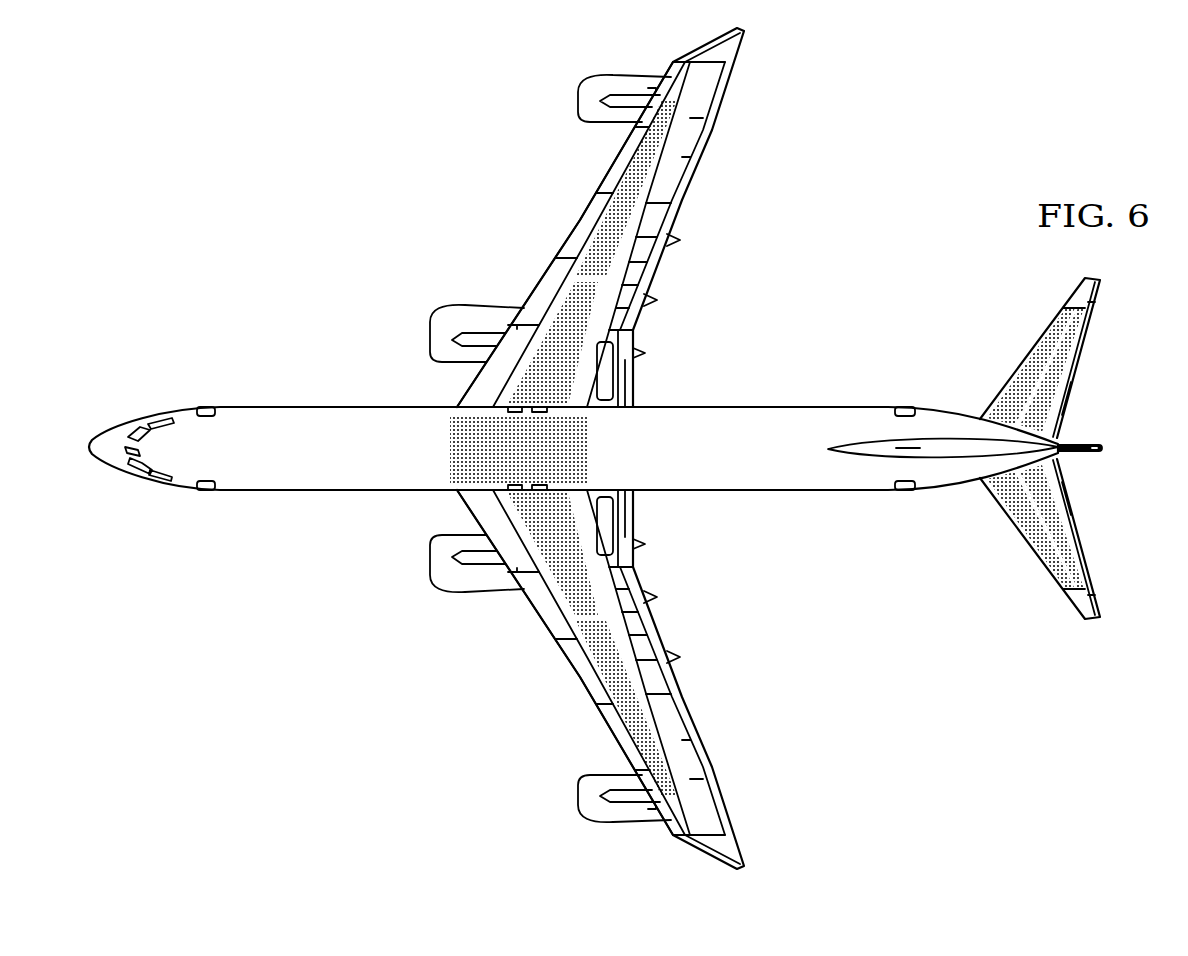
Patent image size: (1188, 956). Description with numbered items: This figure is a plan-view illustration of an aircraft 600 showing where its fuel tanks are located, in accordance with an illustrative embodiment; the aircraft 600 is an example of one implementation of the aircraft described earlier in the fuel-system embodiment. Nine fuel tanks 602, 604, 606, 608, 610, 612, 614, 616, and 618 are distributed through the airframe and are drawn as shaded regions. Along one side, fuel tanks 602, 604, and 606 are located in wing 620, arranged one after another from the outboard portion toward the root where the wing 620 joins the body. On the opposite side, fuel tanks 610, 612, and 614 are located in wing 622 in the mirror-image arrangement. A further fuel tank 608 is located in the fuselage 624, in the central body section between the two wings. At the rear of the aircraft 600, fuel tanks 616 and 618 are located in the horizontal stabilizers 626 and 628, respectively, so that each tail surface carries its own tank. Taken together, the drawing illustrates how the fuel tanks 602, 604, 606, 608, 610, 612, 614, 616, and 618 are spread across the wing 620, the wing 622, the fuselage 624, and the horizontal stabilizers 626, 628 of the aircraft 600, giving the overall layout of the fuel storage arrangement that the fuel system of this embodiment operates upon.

The aircraft 600 is at (290, 172).
The fuel tank 602 is at (668, 144).
The fuel tank 604 is at (632, 175).
The fuel tank 606 is at (565, 297).
The fuel tank 608 is at (452, 457).
The fuel tank 610 is at (570, 600).
The fuel tank 612 is at (638, 723).
The fuel tank 614 is at (660, 753).
The fuel tank 616 is at (1037, 362).
The fuel tank 618 is at (1037, 537).
The wing 620 is at (576, 219).
The wing 622 is at (577, 677).
The fuselage 624 is at (318, 409).
The horizontal stabilizer 626 is at (1086, 348).
The horizontal stabilizer 628 is at (1084, 548).